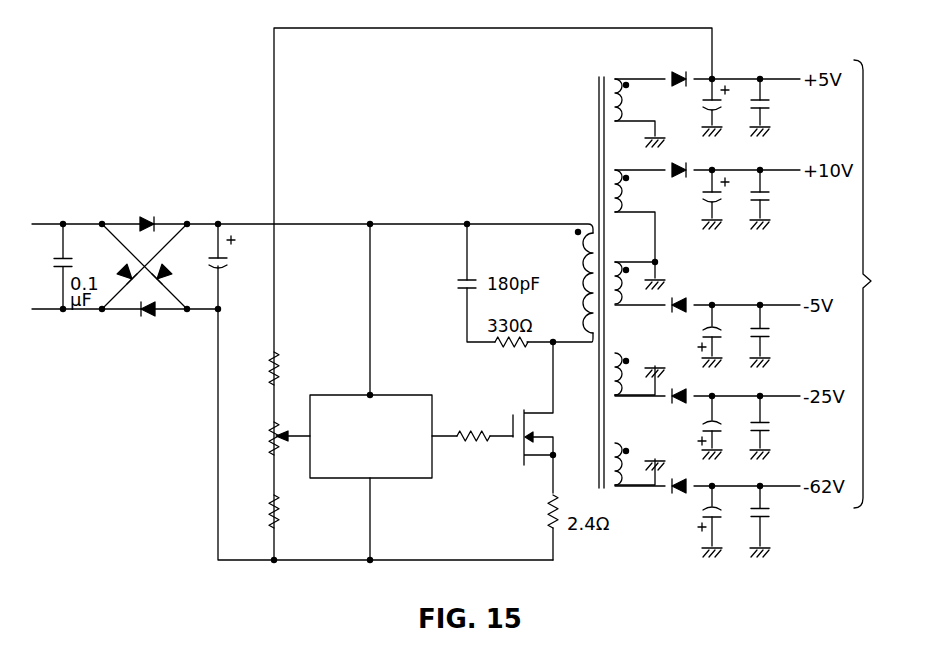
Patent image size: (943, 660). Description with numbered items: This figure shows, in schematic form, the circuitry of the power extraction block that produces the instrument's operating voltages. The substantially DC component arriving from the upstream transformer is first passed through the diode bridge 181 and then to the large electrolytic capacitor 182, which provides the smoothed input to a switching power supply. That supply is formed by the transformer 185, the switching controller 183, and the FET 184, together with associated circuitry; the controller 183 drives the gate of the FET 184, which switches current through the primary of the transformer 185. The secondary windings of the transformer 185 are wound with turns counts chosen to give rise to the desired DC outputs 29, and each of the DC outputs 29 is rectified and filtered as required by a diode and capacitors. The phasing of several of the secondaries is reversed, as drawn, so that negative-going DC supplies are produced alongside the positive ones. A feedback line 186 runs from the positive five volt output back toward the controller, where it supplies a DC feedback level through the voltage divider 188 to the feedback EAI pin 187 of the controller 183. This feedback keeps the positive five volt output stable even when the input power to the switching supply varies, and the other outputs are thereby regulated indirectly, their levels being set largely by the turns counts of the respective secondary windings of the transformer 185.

The diode bridge 181 is at (143, 216).
The large electrolytic capacitor 182 is at (233, 219).
The switching controller 183 is at (395, 393).
The FET 184 is at (549, 432).
The transformer 185 is at (598, 128).
The feedback line 186 is at (274, 117).
The feedback EAI pin 187 is at (297, 432).
The voltage divider 188 is at (274, 497).
The DC outputs 29 is at (877, 284).